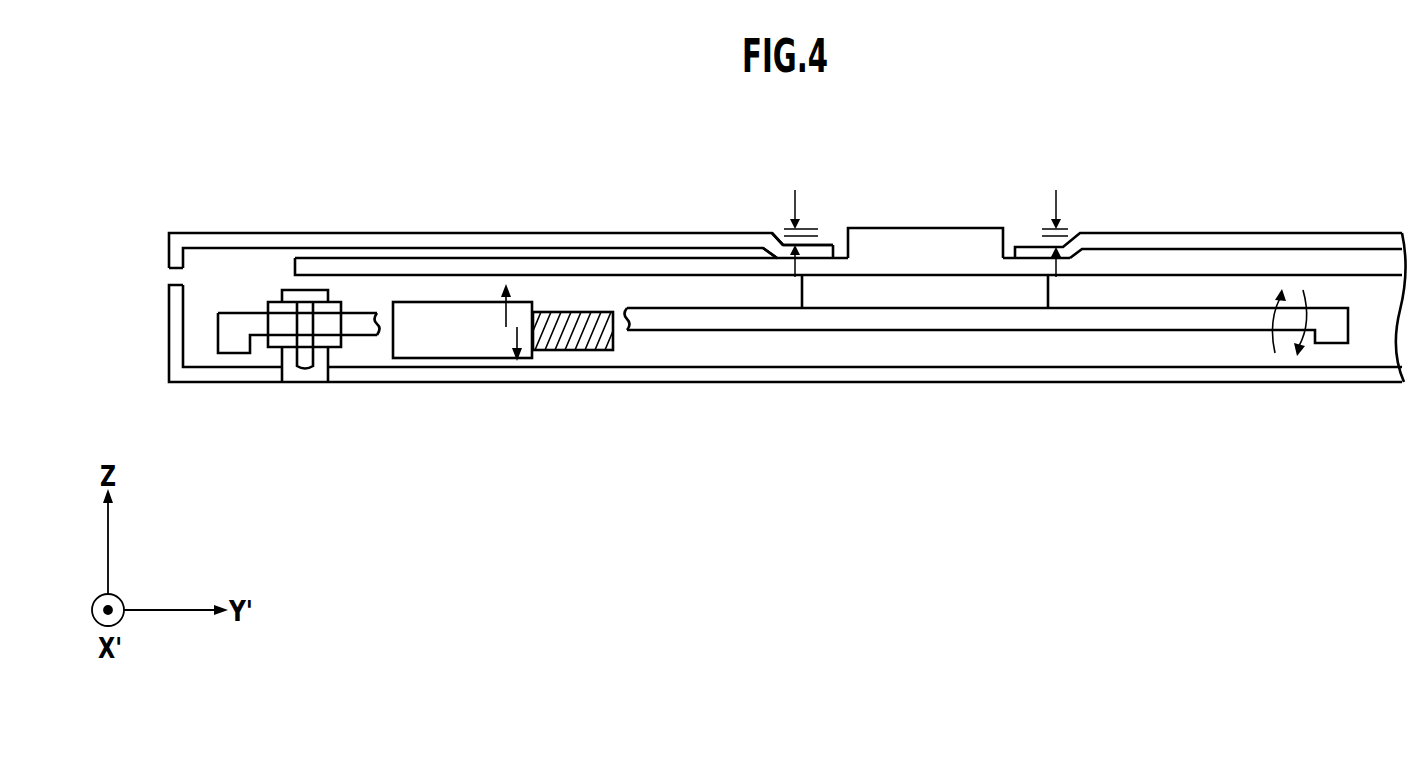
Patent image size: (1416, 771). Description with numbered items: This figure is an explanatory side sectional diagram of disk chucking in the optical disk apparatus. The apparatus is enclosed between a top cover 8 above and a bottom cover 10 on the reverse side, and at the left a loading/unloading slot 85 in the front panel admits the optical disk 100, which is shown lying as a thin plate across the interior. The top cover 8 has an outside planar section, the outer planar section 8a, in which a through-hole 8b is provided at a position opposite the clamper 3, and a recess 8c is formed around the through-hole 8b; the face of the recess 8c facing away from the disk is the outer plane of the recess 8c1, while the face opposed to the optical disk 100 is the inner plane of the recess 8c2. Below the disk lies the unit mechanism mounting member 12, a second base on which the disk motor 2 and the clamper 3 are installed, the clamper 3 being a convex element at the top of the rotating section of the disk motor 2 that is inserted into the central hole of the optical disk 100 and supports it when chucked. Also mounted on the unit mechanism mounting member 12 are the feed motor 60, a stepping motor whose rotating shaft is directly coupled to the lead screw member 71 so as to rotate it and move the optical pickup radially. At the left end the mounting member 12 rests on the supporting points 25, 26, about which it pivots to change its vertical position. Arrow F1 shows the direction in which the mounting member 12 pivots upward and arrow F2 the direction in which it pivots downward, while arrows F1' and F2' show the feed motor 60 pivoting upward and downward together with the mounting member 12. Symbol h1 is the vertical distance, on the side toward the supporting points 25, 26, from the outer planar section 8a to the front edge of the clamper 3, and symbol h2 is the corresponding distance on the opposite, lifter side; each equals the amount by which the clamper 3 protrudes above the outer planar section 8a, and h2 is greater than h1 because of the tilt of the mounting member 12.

The disk motor 2 is at (910, 292).
The clamper 3 is at (956, 228).
The top cover 8 is at (363, 233).
The outer planar section 8a is at (562, 233).
The through-hole 8b is at (1012, 250).
The recess 8c is at (815, 255).
The outer plane of the recess 8c1 is at (825, 247).
The inner plane of the recess 8c2 is at (826, 260).
The bottom cover 10 is at (1257, 383).
The unit mechanism mounting member 12 is at (363, 333).
The supporting point 25 is at (298, 382).
The supporting point 26 is at (305, 364).
The feed motor 60 is at (438, 342).
The lead screw member 71 is at (577, 350).
The loading/unloading slot 85 is at (177, 277).
The optical disk 100 is at (1163, 275).
The upward pivoting direction F1 is at (1258, 271).
The downward pivoting direction F2 is at (1321, 272).
The feed motor upward pivoting direction F1' is at (481, 245).
The feed motor downward pivoting direction F2' is at (532, 262).
The vertical distance h1 is at (789, 232).
The vertical distance h2 is at (1068, 233).